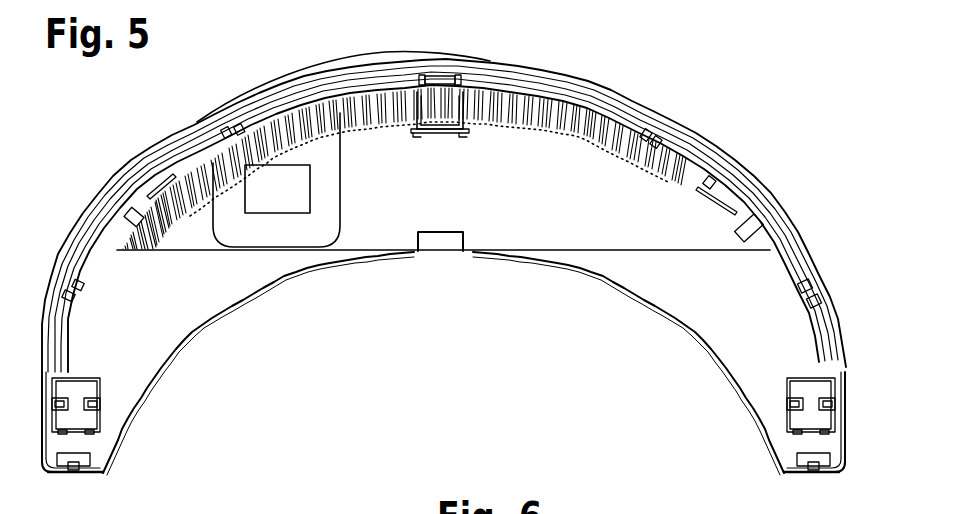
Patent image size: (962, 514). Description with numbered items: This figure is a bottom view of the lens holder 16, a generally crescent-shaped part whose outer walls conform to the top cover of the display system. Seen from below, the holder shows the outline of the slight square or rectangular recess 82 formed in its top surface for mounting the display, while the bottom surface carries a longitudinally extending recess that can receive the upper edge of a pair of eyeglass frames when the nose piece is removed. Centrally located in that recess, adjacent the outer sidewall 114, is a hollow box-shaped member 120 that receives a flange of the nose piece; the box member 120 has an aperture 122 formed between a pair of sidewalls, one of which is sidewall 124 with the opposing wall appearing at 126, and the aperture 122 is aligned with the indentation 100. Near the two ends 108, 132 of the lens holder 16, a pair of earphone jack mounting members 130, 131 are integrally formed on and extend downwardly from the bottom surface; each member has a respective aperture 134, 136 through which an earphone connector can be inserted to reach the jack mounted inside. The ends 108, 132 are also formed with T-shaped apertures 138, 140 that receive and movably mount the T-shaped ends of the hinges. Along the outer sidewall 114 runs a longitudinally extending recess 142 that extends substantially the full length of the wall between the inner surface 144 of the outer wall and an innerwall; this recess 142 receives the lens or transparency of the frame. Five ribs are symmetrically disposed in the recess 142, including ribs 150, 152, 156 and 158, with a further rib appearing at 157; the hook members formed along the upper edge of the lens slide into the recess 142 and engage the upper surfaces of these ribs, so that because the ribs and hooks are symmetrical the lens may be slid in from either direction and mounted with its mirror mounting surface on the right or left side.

The lens holder 16 is at (803, 87).
The recess 82 is at (330, 234).
The indentation 100 is at (438, 242).
The end of the lens holder 108 is at (37, 458).
The outer sidewall 114 is at (589, 88).
The hollow box-shaped member 120 is at (437, 122).
The aperture 122 is at (437, 133).
The sidewall 124 is at (467, 113).
The connector left wall 126 is at (412, 108).
The earphone jack mounting member 130 is at (75, 387).
The earphone jack mounting member 131 is at (812, 387).
The end of the lens holder 132 is at (843, 462).
The aperture 134 is at (100, 421).
The aperture 136 is at (783, 423).
The T-shaped aperture 138 is at (77, 472).
The T-shaped aperture 140 is at (815, 473).
The longitudinally extending recess 142 is at (712, 177).
The inner surface of the outer wall 144 is at (634, 103).
The rib 150 is at (70, 284).
The rib 152 is at (442, 77).
The rib 156 is at (652, 136).
The left upper fastening tab 157 is at (232, 128).
The rib 158 is at (827, 287).